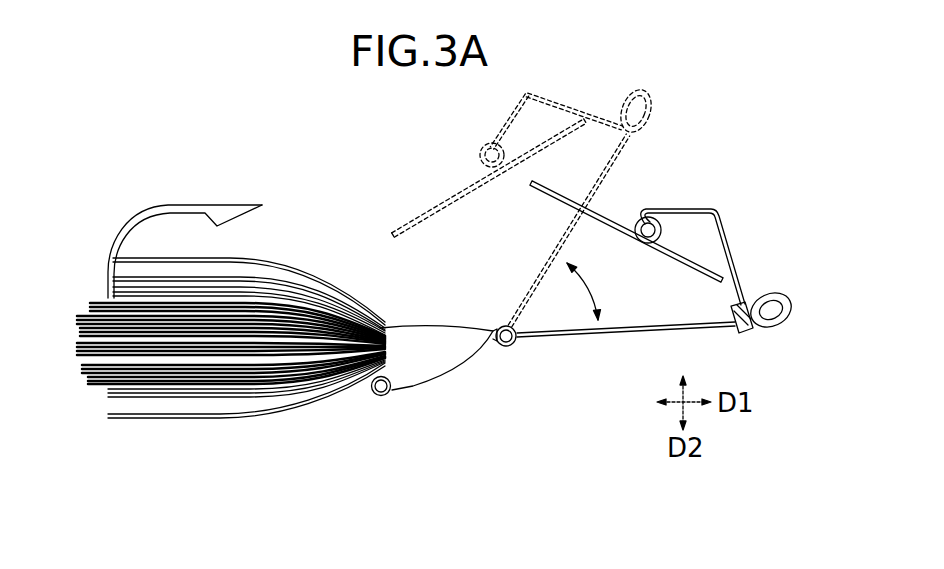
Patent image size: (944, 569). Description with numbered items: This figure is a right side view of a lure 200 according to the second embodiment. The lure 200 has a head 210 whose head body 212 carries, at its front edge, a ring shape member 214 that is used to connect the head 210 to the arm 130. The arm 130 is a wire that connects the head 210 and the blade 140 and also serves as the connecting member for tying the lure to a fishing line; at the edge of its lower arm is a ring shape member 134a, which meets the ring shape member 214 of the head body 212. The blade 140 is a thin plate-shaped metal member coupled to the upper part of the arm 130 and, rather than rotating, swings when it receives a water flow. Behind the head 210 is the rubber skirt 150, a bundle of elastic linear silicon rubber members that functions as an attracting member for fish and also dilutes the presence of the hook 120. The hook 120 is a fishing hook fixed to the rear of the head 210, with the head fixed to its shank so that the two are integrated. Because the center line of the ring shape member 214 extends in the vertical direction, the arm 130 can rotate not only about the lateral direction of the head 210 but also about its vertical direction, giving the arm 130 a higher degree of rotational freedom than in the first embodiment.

The hook 120 is at (202, 212).
The arm 130 is at (752, 264).
The ring shape member 134a is at (518, 347).
The blade 140 is at (620, 204).
The rubber skirt 150 is at (245, 442).
The lure 200 is at (716, 80).
The head 210 is at (473, 392).
The head body 212 is at (413, 386).
The ring shape member 214 is at (497, 326).